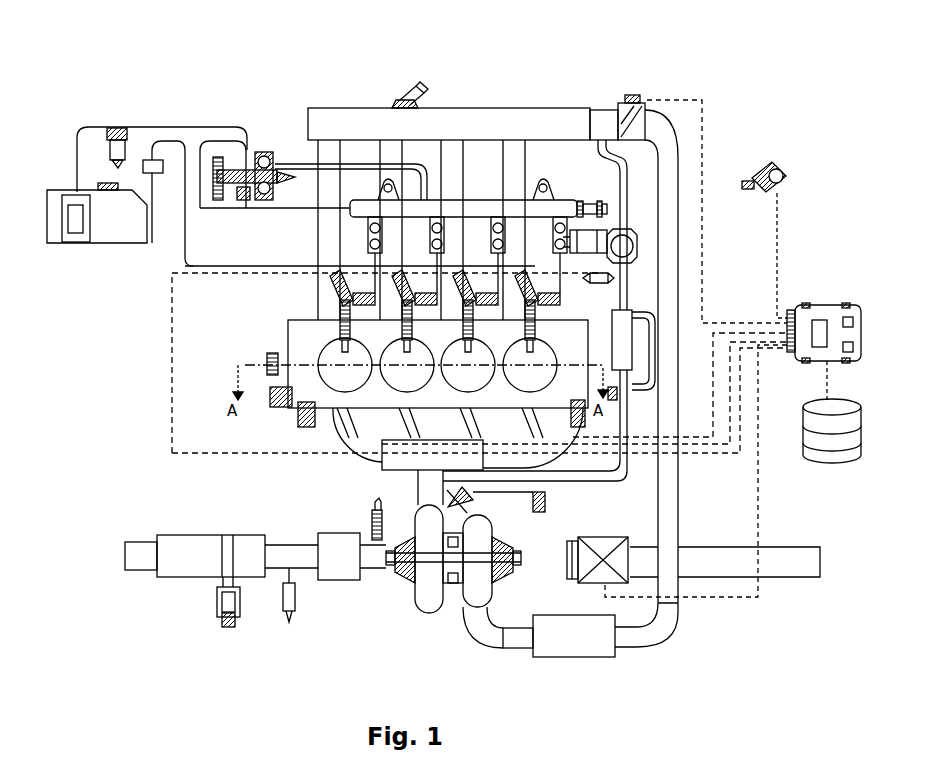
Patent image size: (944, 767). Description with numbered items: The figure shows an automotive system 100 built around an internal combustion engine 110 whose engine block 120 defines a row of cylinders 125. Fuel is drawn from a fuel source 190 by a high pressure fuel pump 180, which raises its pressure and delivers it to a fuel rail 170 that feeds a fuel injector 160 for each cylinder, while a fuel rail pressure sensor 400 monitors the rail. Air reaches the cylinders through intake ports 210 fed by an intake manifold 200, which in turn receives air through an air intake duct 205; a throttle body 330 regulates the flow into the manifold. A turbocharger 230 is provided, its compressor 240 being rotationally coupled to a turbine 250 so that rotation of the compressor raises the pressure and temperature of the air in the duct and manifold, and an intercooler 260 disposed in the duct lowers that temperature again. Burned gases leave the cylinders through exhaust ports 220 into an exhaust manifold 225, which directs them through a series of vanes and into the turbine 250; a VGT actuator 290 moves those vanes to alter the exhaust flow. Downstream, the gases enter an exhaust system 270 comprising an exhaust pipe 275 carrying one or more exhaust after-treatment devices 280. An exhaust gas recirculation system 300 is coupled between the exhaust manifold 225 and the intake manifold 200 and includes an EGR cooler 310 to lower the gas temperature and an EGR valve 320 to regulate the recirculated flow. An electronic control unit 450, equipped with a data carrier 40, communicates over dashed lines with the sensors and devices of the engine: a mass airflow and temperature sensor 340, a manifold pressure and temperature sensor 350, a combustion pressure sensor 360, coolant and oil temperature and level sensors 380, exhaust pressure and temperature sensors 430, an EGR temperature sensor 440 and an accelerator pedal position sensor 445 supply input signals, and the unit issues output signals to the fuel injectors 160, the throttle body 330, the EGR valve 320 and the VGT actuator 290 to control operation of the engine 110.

The automotive system 100 is at (230, 97).
The internal combustion engine 110 is at (541, 97).
The engine block 120 is at (288, 330).
The cylinder 125 is at (548, 350).
The fuel injector 160 is at (333, 303).
The fuel rail 170 is at (350, 212).
The high pressure fuel pump 180 is at (257, 150).
The fuel source 190 is at (120, 232).
The intake manifold 200 is at (453, 137).
The air intake duct 205 is at (788, 567).
The intake port 210 is at (333, 322).
The exhaust port 220 is at (335, 427).
The exhaust manifold 225 is at (405, 463).
The turbocharger 230 is at (425, 618).
The compressor 240 is at (478, 587).
The turbine 250 is at (428, 580).
The intercooler 260 is at (598, 645).
The exhaust system 270 is at (197, 527).
The exhaust pipe 275 is at (137, 560).
The exhaust after-treatment device 280 is at (338, 562).
The VGT actuator 290 is at (487, 512).
The exhaust gas recirculation system 300 is at (596, 488).
The EGR cooler 310 is at (623, 353).
The EGR valve 320 is at (627, 233).
The throttle body 330 is at (641, 97).
The mass airflow and temperature sensor 340 is at (610, 583).
The manifold pressure and temperature sensor 350 is at (398, 95).
The combustion pressure sensor 360 is at (353, 390).
The coolant and oil temperature and level sensors 380 is at (300, 413).
The fuel rail pressure sensor 400 is at (610, 207).
The exhaust pressure and temperature sensors 430 is at (287, 613).
The EGR temperature sensor 440 is at (623, 273).
The accelerator pedal position sensor 445 is at (780, 167).
The electronic control unit 450 is at (827, 305).
The data carrier 40 is at (830, 461).